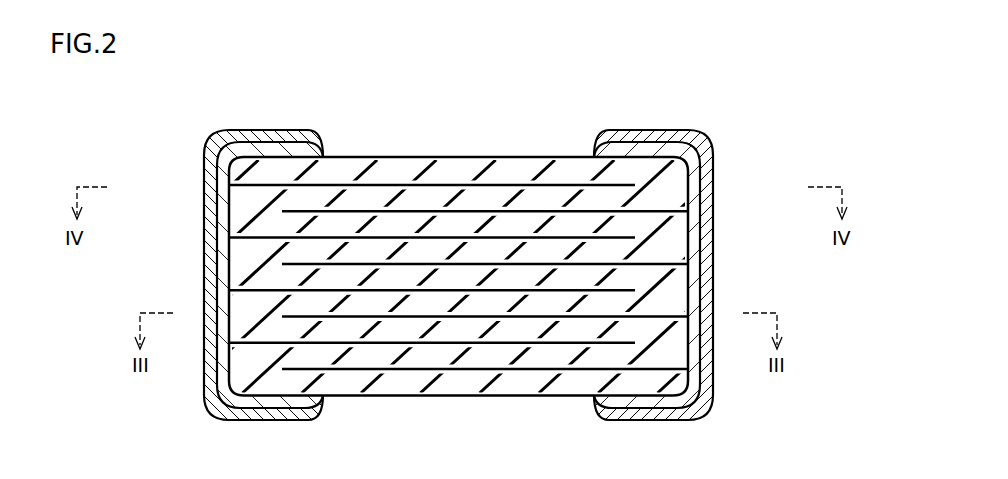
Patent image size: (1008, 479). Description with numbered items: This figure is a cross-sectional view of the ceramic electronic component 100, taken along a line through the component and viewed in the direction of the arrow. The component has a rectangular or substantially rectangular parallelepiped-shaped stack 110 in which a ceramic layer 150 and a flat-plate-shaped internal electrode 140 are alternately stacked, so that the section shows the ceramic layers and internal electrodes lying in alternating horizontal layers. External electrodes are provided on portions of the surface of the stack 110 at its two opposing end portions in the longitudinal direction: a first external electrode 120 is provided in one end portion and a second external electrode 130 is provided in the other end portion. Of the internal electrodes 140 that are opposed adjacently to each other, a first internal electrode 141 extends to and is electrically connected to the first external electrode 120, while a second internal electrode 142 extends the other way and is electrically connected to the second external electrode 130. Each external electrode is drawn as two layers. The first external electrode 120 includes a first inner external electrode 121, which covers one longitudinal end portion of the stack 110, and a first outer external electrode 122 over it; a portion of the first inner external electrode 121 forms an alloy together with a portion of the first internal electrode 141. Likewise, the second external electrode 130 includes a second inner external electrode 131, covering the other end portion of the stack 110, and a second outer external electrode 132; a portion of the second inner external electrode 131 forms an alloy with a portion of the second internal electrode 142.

The ceramic electronic component 100 is at (694, 105).
The stack 110 is at (552, 74).
The ceramic layer 150 is at (443, 172).
The internal electrode 140 is at (577, 107).
The second internal electrode 142 is at (503, 185).
The first internal electrode 141 is at (549, 211).
The second external electrode 130 is at (140, 227).
The second outer external electrode 132 is at (209, 244).
The second inner external electrode 131 is at (222, 284).
The first external electrode 120 is at (778, 227).
The first outer external electrode 122 is at (709, 246).
The first inner external electrode 121 is at (697, 286).